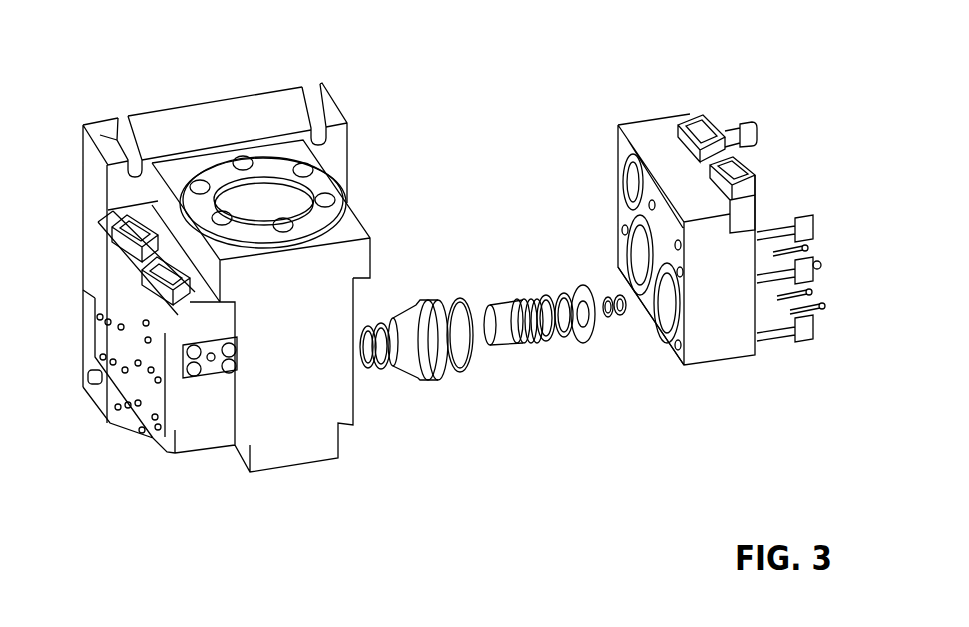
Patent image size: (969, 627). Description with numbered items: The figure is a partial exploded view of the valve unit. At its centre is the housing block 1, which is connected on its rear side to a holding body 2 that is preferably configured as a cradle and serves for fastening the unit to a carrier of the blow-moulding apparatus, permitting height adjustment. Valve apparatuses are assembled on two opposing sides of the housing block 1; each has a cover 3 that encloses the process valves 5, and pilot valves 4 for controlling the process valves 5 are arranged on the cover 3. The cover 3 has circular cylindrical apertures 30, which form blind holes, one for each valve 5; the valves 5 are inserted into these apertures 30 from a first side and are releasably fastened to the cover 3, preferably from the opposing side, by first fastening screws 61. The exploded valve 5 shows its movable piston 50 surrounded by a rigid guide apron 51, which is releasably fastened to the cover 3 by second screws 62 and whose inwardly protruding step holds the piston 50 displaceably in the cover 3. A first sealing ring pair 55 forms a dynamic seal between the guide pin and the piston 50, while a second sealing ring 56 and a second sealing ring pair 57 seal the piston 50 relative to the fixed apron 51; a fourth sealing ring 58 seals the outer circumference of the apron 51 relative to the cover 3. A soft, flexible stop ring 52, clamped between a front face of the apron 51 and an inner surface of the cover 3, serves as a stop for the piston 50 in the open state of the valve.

The housing block 1 is at (287, 447).
The holding body 2 is at (221, 102).
The cover 3 is at (175, 452).
The pilot valves 4 is at (112, 243).
The process valves 5 is at (483, 459).
The circular cylindrical apertures 30 is at (663, 312).
The piston 50 is at (488, 345).
The guide apron 51 is at (412, 372).
The stop ring 52 is at (572, 280).
The first sealing ring pair 55 is at (609, 317).
The second sealing ring 56 is at (568, 337).
The second sealing ring pair 57 is at (372, 370).
The fourth sealing ring 58 is at (452, 298).
The first fastening screws 61 is at (797, 220).
The second screws 62 is at (813, 297).